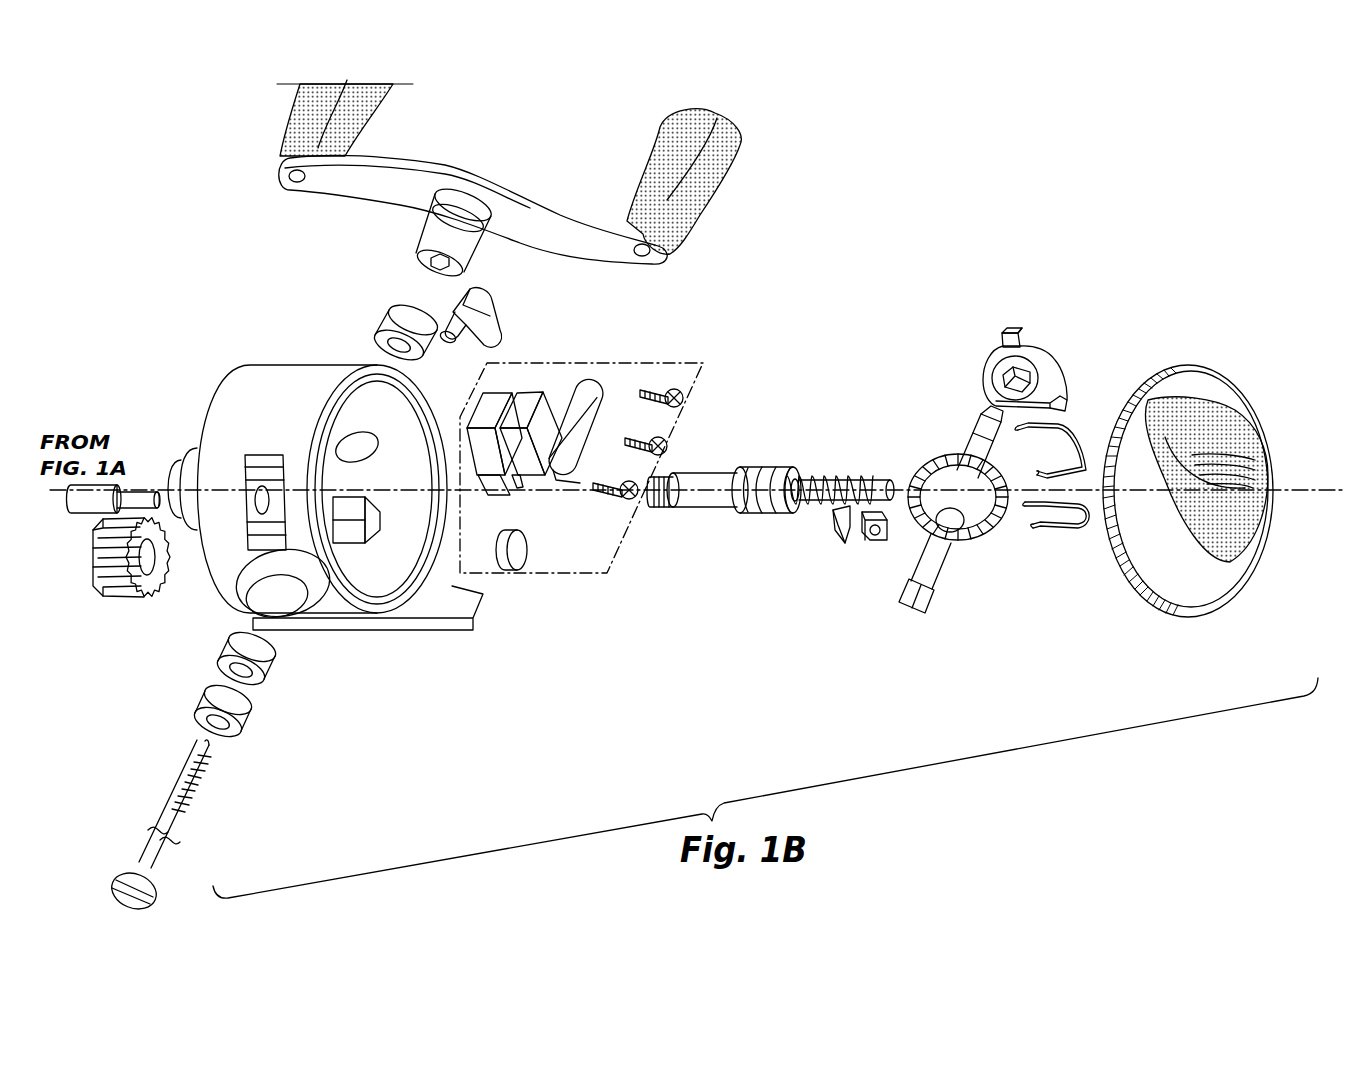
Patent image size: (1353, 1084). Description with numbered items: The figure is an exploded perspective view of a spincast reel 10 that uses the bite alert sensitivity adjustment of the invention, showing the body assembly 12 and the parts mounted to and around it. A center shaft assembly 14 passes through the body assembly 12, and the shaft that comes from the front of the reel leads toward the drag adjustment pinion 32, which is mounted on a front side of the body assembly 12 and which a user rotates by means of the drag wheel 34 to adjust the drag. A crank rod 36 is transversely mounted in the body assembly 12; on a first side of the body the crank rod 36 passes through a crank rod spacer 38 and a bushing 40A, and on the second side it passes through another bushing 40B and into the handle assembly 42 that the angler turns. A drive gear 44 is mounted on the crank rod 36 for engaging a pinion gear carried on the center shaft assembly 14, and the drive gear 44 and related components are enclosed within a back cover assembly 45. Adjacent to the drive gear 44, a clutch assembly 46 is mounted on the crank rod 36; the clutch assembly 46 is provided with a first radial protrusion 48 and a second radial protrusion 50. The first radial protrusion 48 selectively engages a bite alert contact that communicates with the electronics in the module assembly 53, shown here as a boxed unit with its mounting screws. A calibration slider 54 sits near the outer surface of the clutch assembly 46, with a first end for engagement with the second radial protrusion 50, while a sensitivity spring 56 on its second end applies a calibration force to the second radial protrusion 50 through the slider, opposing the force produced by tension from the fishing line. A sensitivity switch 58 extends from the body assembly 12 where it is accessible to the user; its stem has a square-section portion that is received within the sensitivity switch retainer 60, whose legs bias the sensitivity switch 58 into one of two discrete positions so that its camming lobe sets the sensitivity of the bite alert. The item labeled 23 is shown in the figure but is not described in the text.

The spincast reel 10 is at (855, 236).
The body assembly 12 is at (437, 628).
The center shaft assembly 14 is at (773, 467).
The spring 23 is at (1080, 440).
The drag adjustment pinion 32 is at (122, 487).
The drag wheel 34 is at (113, 597).
The crank rod 36 is at (160, 847).
The crank rod spacer 38 is at (242, 717).
The bushing 40A is at (272, 658).
The bushing 40B is at (387, 320).
The handle assembly 42 is at (480, 180).
The drive gear 44 is at (963, 543).
The back cover assembly 45 is at (1207, 577).
The clutch assembly 46 is at (987, 360).
The first radial protrusion 48 is at (1003, 333).
The second radial protrusion 50 is at (1060, 403).
The module assembly 53 is at (683, 363).
The calibration slider 54 is at (867, 537).
The sensitivity spring 56 is at (835, 537).
The sensitivity switch 58 is at (487, 317).
The sensitivity switch retainer 60 is at (1050, 530).